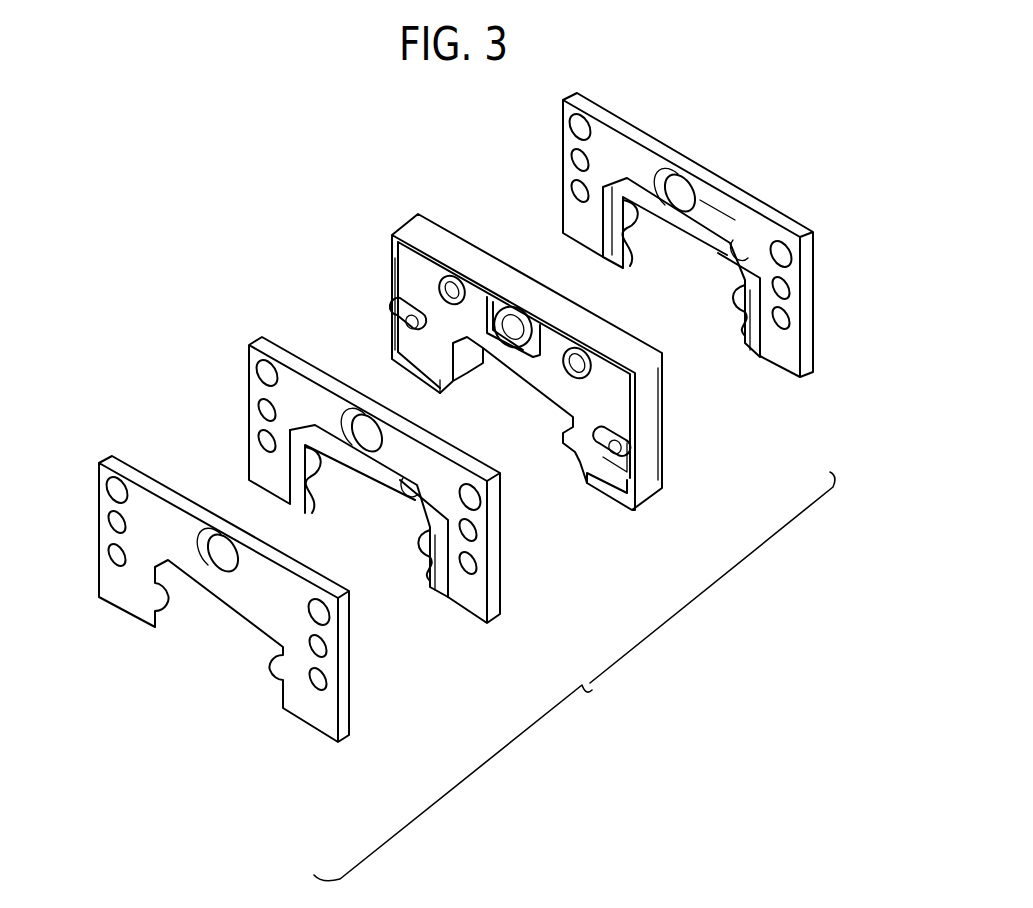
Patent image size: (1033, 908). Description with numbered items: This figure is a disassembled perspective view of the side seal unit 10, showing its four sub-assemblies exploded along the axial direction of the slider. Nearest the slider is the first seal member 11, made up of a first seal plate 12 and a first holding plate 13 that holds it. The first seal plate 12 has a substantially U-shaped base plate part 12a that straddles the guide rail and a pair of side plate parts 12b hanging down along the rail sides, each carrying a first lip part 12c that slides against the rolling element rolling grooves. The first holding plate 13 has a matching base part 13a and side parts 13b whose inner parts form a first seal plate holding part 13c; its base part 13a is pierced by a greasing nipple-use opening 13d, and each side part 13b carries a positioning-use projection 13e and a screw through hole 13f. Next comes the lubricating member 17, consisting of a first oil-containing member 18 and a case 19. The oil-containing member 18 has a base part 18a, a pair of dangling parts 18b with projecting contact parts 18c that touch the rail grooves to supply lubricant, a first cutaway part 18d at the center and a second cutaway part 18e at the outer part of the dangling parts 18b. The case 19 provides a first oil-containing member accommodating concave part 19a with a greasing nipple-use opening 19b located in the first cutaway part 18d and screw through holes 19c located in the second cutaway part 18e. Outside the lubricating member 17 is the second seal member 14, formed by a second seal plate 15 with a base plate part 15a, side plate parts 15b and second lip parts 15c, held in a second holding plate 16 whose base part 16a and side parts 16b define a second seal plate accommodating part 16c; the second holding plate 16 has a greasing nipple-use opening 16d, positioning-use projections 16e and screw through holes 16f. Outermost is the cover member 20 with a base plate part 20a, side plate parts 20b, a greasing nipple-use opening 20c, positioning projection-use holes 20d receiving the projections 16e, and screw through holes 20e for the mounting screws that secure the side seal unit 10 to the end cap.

The side seal unit 10 is at (574, 676).
The first seal member 11 is at (682, 287).
The first seal plate 12 is at (635, 250).
The base plate part 12a is at (645, 198).
The side plate parts 12b is at (607, 237).
The first lip parts 12c is at (634, 239).
The first holding plate 13 is at (682, 235).
The base part 13a is at (720, 210).
The side parts 13b is at (575, 178).
The first seal plate holding part 13c is at (745, 250).
The greasing nipple-use opening 13d is at (681, 190).
The positioning-use projection 13e is at (787, 291).
The screw through hole 13f is at (787, 320).
The second seal member 14 is at (373, 531).
The second seal plate 15 is at (316, 510).
The base plate part 15a is at (373, 470).
The side plate parts 15b is at (293, 487).
The second lip parts 15c is at (325, 480).
The second holding plate 16 is at (373, 477).
The base part 16a is at (332, 412).
The side parts 16b is at (257, 426).
The second seal plate accommodating part 16c is at (410, 484).
The greasing nipple-use opening 16d is at (368, 430).
The positioning-use projection 16e is at (477, 531).
The screw through hole 16f is at (470, 563).
The lubricating member 17 is at (522, 409).
The first oil-containing member 18 is at (522, 388).
The base part 18a is at (523, 365).
The dangling parts 18b is at (395, 275).
The contact parts 18c is at (462, 370).
The first cutaway part 18d is at (537, 350).
The second cutaway part 18e is at (400, 310).
The case 19 is at (522, 362).
The first oil-containing member accommodating concave part 19a is at (413, 366).
The greasing nipple-use opening 19b is at (517, 322).
The screw through holes 19c is at (405, 318).
The cover member 20 is at (223, 651).
The base plate part 20a is at (253, 594).
The side plate parts 20b is at (123, 598).
The greasing nipple-use opening 20c is at (216, 573).
The positioning projection-use hole 20d is at (110, 523).
The screw through hole 20e is at (110, 555).